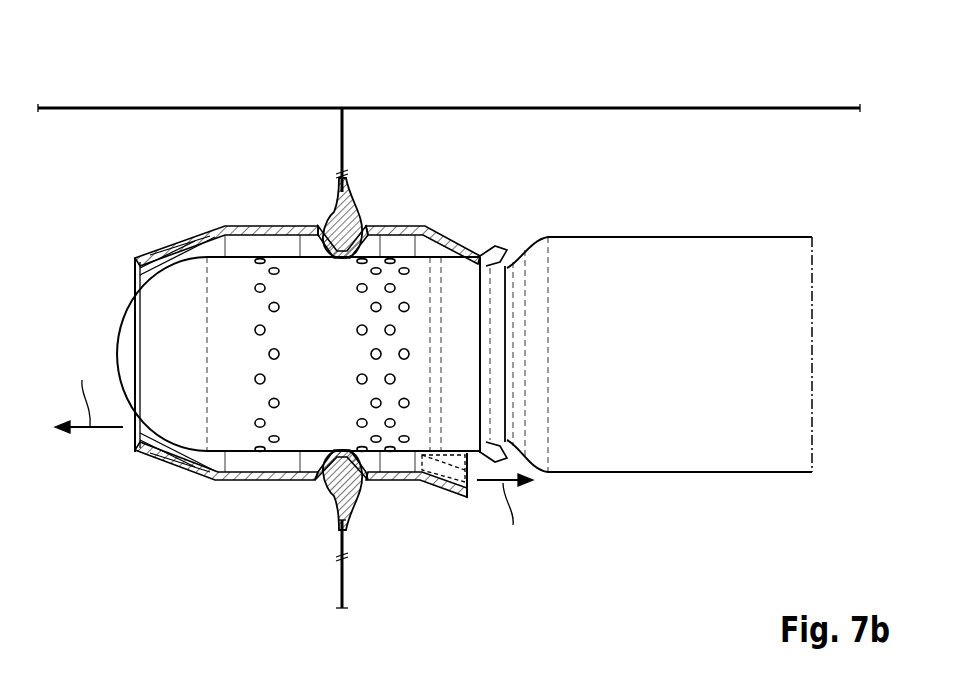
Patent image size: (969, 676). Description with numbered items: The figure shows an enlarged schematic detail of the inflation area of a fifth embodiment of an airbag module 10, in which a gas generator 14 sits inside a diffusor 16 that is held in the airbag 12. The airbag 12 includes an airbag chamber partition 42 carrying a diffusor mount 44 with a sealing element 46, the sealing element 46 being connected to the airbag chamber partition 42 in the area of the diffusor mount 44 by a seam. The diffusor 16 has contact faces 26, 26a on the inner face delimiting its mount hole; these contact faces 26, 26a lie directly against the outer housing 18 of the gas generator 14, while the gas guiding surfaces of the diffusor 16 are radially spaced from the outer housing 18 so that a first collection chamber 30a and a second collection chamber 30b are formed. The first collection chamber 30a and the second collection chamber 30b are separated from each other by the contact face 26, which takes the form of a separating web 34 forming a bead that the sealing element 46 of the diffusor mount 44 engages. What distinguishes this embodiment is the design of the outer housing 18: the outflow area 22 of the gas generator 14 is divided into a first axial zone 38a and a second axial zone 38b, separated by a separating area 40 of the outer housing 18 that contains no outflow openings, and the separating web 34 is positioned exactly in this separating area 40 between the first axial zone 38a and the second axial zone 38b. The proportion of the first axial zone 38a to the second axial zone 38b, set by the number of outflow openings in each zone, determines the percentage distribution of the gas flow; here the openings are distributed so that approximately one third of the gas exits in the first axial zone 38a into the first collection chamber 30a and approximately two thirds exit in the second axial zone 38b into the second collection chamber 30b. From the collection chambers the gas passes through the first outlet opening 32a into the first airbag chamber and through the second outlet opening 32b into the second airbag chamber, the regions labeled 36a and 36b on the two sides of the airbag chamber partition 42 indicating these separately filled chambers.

The airbag module 10 is at (274, 290).
The airbag 12 is at (722, 108).
The gas generator 14 is at (800, 329).
The diffusor 16 is at (168, 477).
The outer housing 18 is at (150, 323).
The outflow area 22 is at (280, 456).
The contact face 26 is at (353, 448).
The separating web 34 is at (379, 554).
The contact face 26a is at (493, 272).
The first collection chamber 30a is at (248, 243).
The second collection chamber 30b is at (405, 243).
The first outlet opening 32a is at (148, 432).
The second outlet opening 32b is at (467, 485).
The first gas region 36a is at (153, 167).
The second gas region 36b is at (632, 167).
The first axial zone 38a is at (230, 455).
The second axial zone 38b is at (407, 455).
The separating area 40 is at (343, 422).
The airbag chamber partition 42 is at (345, 133).
The diffusor mount 44 is at (370, 218).
The sealing element 46 is at (340, 215).